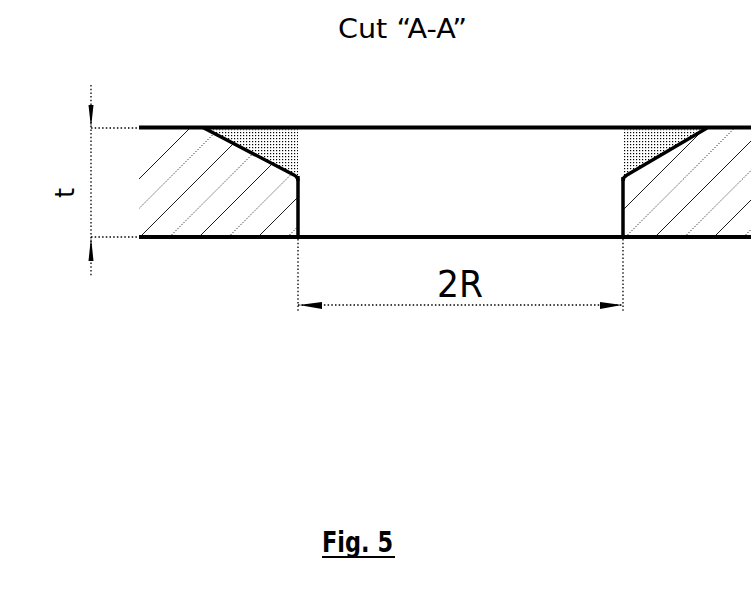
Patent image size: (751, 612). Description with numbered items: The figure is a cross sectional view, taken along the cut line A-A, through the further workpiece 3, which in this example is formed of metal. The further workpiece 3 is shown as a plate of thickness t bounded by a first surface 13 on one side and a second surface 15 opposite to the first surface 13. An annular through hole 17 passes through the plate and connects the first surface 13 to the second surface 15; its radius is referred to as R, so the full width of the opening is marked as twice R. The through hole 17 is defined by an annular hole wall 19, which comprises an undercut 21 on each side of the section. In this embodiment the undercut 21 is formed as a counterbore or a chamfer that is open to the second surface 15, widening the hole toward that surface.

The further workpiece 3 is at (710, 197).
The first surface 13 is at (190, 237).
The second surface 15 is at (155, 128).
The annular through hole 17 is at (440, 185).
The annular hole wall 19 is at (298, 210).
The undercut 21 is at (275, 150).